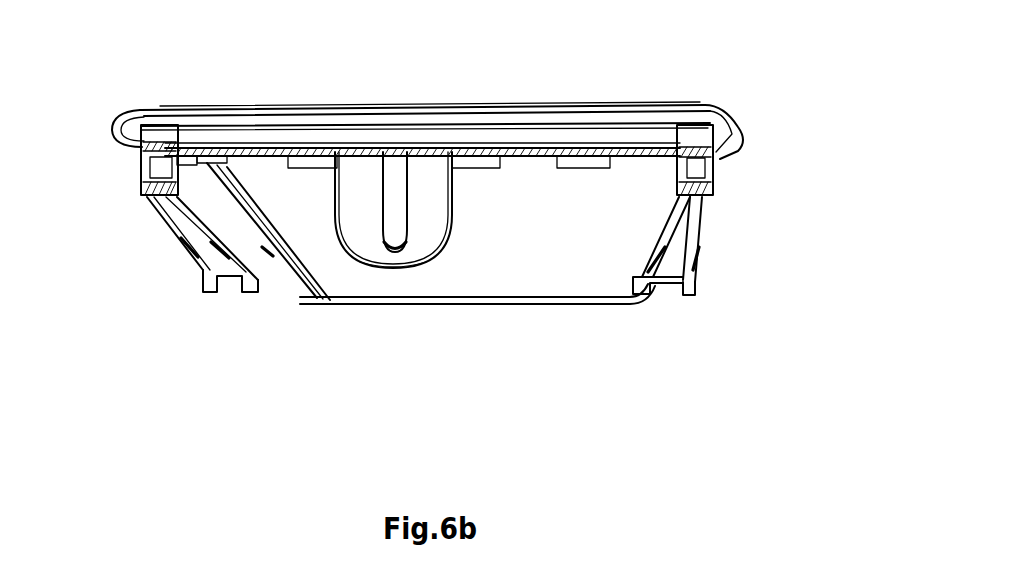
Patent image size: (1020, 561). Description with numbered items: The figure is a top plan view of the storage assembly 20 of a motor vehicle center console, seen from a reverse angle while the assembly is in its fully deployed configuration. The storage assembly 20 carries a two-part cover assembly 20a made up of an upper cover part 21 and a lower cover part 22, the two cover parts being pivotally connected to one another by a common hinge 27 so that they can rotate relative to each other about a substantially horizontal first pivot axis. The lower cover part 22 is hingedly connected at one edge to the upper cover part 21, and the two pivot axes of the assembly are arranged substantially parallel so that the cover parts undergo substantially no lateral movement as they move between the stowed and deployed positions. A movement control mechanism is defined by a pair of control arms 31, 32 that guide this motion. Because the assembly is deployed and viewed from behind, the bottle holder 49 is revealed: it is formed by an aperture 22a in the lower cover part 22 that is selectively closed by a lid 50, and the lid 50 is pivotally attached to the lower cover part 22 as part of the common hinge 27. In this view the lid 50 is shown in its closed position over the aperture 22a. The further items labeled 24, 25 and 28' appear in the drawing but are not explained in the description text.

The storage assembly 20 is at (736, 86).
The two-part cover assembly 20a is at (548, 91).
The upper cover part 21 is at (262, 108).
The common hinge 27 is at (480, 150).
The left side post 24 is at (140, 183).
The right side post 25 is at (712, 166).
The control arm 32 is at (197, 258).
The control arm 31 is at (695, 292).
The lower cover part 22 is at (583, 253).
The aperture 22a is at (358, 255).
The bottle holder 49 is at (376, 286).
The lid 50 is at (419, 232).
The bottom plate 28' is at (477, 328).